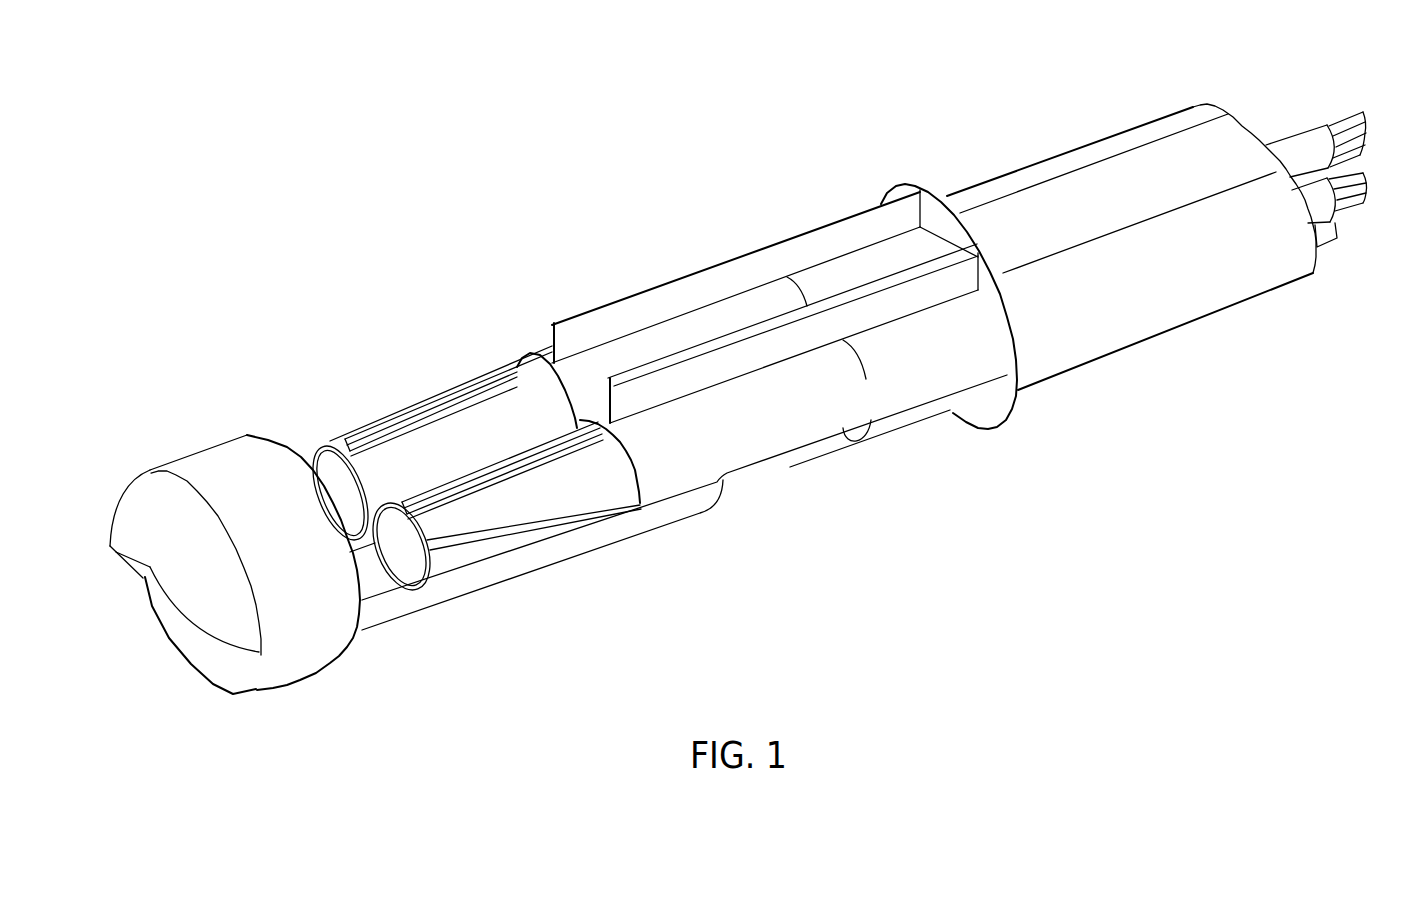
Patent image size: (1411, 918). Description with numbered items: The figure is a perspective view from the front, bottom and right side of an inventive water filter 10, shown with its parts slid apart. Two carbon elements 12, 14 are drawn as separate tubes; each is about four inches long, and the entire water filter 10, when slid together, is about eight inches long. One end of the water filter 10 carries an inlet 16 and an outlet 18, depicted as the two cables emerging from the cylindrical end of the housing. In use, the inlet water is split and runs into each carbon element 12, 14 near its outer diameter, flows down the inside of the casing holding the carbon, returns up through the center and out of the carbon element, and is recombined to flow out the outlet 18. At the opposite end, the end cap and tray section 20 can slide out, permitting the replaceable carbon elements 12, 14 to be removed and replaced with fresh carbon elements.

The water filter 10 is at (739, 176).
The carbon element 12 is at (422, 445).
The carbon element 14 is at (530, 525).
The inlet 16 is at (1302, 133).
The outlet 18 is at (1353, 216).
The end cap and tray section 20 is at (221, 478).